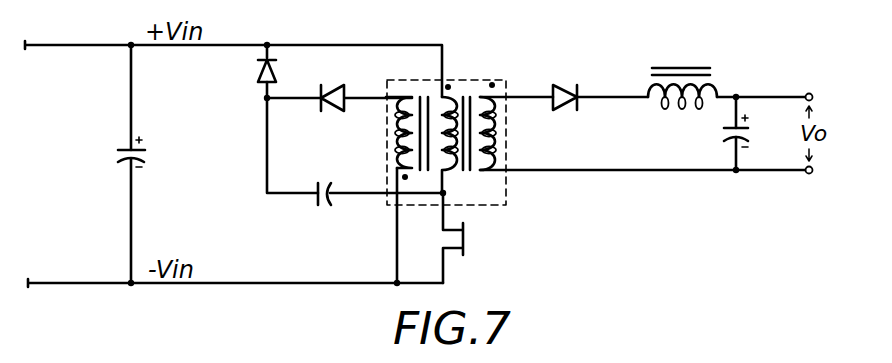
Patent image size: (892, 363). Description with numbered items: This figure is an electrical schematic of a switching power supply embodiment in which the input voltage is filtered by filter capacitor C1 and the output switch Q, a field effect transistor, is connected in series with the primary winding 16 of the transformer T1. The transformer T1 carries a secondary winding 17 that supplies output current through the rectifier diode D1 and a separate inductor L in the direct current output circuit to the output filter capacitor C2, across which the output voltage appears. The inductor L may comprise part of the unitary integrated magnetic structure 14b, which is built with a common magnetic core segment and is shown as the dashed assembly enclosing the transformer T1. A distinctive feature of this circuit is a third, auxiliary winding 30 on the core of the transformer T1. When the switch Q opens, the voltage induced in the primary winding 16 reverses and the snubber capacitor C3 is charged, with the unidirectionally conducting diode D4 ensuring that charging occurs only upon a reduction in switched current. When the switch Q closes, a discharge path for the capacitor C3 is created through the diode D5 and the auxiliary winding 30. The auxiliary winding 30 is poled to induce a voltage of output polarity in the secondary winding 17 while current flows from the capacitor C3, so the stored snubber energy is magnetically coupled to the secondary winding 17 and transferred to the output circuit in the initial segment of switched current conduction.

The auxiliary winding 30 is at (416, 79).
The primary winding 16 is at (456, 98).
The secondary winding 17 is at (498, 130).
The integrated magnetic structure 14b is at (508, 207).
The transformer T1 is at (451, 147).
The rectifier diode D1 is at (568, 84).
The diode D4 is at (247, 69).
The diode D5 is at (339, 113).
The filter capacitor C1 is at (150, 156).
The output filter capacitor C2 is at (722, 132).
The snubber capacitor C3 is at (327, 212).
The inductor L is at (682, 100).
The switch Q is at (481, 243).